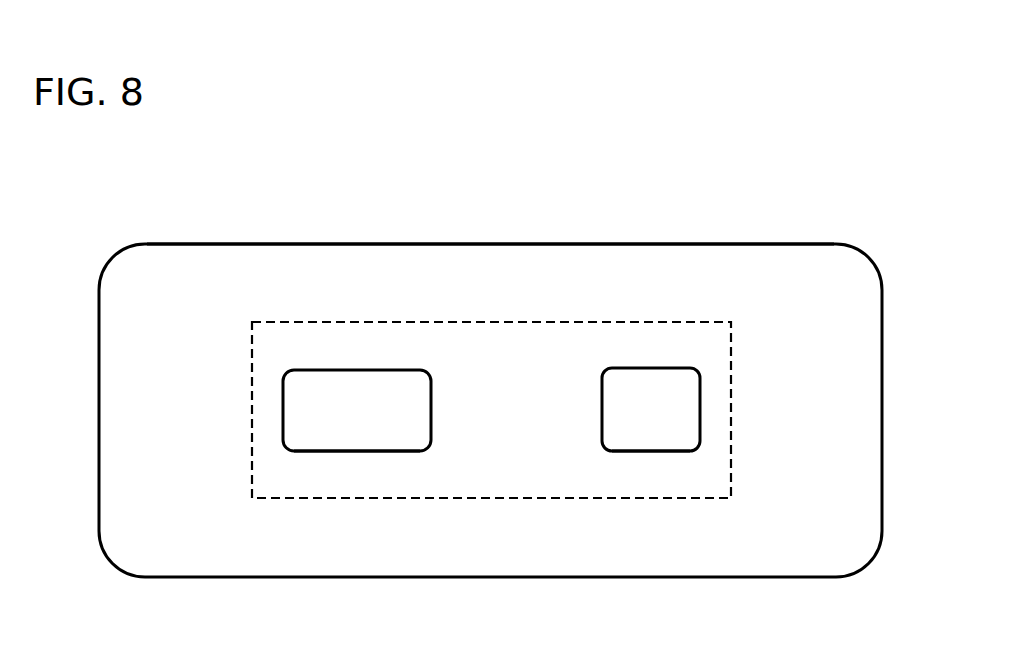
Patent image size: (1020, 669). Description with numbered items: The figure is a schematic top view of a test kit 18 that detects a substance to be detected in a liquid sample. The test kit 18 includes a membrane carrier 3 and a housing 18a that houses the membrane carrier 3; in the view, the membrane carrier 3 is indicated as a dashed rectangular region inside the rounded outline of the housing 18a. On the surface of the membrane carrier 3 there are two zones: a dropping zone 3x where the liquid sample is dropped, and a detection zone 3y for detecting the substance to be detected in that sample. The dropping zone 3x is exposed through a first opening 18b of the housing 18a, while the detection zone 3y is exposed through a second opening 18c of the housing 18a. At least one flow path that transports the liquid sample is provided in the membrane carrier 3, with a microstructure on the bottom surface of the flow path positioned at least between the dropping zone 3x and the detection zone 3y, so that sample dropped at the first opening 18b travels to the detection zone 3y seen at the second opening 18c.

The test kit 18 is at (757, 189).
The housing 18a is at (643, 260).
The membrane carrier 3 is at (510, 498).
The detection zone 3y is at (315, 434).
The second opening 18c is at (388, 448).
The dropping zone 3x is at (633, 432).
The first opening 18b is at (669, 450).